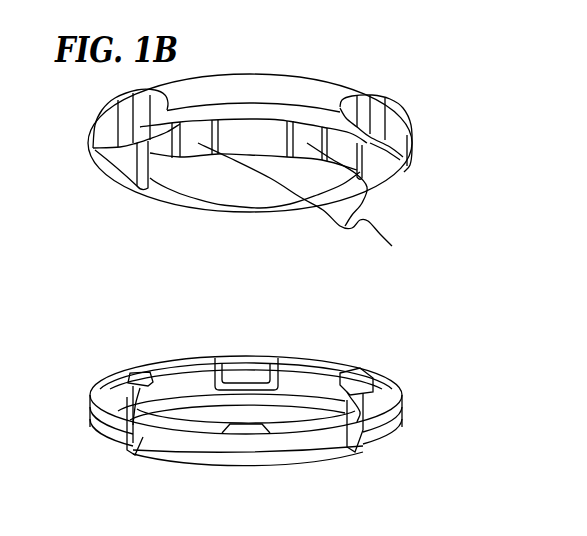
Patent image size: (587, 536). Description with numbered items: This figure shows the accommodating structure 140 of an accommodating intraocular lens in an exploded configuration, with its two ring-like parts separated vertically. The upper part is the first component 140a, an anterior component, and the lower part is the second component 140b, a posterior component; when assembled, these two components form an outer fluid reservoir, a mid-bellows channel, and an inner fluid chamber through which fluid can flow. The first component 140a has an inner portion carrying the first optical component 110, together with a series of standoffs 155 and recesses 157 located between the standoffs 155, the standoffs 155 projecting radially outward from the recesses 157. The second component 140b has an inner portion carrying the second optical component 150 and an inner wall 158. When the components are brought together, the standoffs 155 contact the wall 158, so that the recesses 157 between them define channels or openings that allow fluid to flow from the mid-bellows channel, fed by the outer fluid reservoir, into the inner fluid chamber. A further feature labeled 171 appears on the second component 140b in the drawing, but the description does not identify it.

The accommodating structure 140 is at (82, 97).
The first component 140a is at (345, 48).
The second component 140b is at (323, 472).
The first optical component 110 is at (267, 192).
The recesses 157 is at (261, 140).
The standoffs 155 is at (314, 198).
The wall 158 is at (317, 390).
The second optical component 150 is at (230, 417).
The locking pads 171 is at (150, 377).